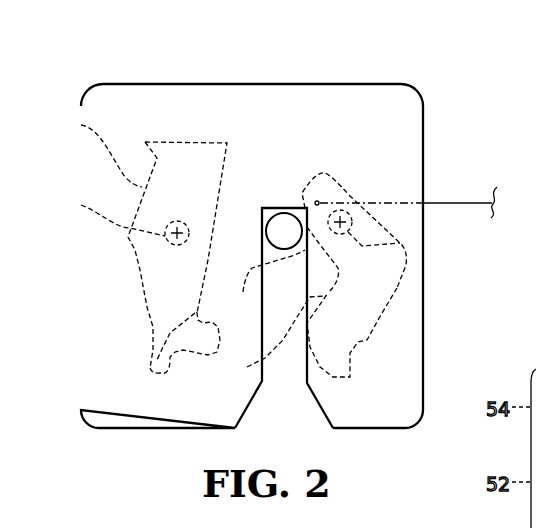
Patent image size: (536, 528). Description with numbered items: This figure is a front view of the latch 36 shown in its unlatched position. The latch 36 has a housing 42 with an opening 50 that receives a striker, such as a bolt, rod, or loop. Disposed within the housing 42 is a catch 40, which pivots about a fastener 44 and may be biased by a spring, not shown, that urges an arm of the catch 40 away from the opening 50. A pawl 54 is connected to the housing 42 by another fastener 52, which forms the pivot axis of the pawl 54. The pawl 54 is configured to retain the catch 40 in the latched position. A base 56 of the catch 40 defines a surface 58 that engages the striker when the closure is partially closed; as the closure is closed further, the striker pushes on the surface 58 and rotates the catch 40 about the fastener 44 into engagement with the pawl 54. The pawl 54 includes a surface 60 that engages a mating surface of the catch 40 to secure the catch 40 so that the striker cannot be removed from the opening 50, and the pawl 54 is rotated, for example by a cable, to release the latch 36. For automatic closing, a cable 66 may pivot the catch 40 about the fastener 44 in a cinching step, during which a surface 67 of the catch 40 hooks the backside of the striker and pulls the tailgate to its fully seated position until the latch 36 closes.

The latch 36 is at (383, 60).
The housing 42 is at (423, 172).
The opening 50 is at (309, 416).
The fastener 44 is at (402, 243).
The cable 66 is at (473, 205).
The pawl 54 is at (81, 125).
The fastener 52 is at (81, 205).
The surface 60 is at (153, 358).
The base 56 is at (302, 193).
The catch 40 is at (363, 296).
The surface 58 is at (268, 285).
The surface 67 is at (274, 338).